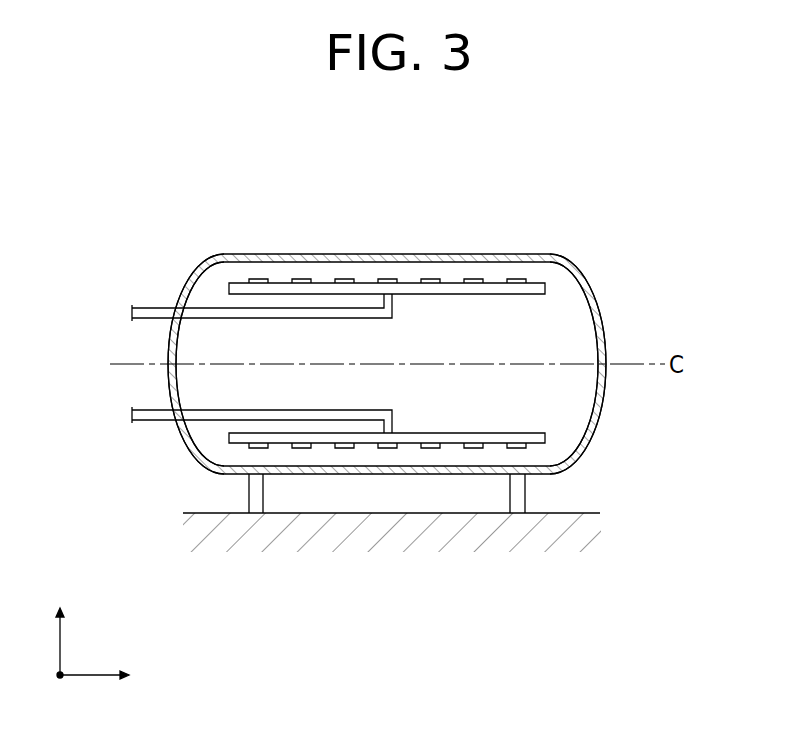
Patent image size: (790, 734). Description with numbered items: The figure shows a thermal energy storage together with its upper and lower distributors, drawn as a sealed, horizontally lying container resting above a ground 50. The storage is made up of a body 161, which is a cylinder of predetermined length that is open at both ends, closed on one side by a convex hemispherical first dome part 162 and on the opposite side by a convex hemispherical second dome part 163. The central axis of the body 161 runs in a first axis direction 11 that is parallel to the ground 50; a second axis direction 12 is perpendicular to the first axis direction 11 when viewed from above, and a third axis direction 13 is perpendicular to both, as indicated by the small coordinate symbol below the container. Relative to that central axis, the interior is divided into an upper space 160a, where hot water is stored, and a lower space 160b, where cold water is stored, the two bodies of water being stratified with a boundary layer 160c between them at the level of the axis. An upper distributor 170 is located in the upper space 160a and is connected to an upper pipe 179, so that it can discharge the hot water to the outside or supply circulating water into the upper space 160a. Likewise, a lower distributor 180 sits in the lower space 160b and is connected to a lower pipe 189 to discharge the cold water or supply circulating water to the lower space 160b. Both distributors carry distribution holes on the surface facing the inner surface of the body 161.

The ground 50 is at (205, 513).
The body 161 is at (333, 254).
The first dome part 162 is at (174, 340).
The second dome part 163 is at (599, 312).
The upper space 160a is at (572, 337).
The lower space 160b is at (572, 419).
The boundary layer 160c is at (440, 363).
The upper distributor 170 is at (452, 282).
The lower distributor 180 is at (445, 432).
The upper pipe 179 is at (151, 308).
The lower pipe 189 is at (151, 410).
The first axis direction 11 is at (109, 677).
The second axis direction 12 is at (62, 693).
The third axis direction 13 is at (62, 624).